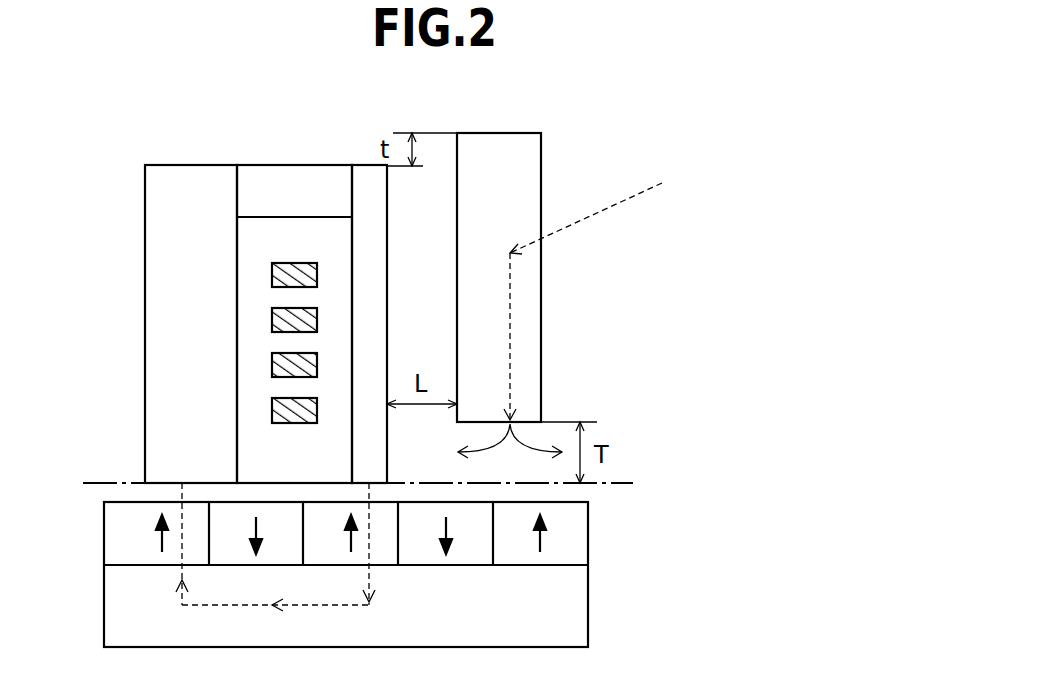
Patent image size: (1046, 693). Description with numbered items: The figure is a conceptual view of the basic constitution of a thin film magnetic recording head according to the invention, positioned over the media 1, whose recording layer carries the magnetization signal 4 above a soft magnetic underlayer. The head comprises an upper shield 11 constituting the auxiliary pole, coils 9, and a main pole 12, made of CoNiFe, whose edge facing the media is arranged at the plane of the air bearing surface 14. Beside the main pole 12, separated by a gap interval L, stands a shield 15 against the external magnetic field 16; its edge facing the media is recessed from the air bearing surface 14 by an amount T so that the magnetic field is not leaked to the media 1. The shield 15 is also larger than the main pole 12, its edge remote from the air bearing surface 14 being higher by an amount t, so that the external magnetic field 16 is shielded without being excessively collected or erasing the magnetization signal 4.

The media 1 is at (438, 538).
The magnetization signal 4 is at (315, 497).
The coils 9 is at (272, 317).
The upper shield 11 is at (190, 187).
The main pole 12 is at (367, 312).
The air bearing surface 14 is at (613, 483).
The shield against the external magnetic field 15 is at (497, 153).
The external magnetic field 16 is at (632, 195).